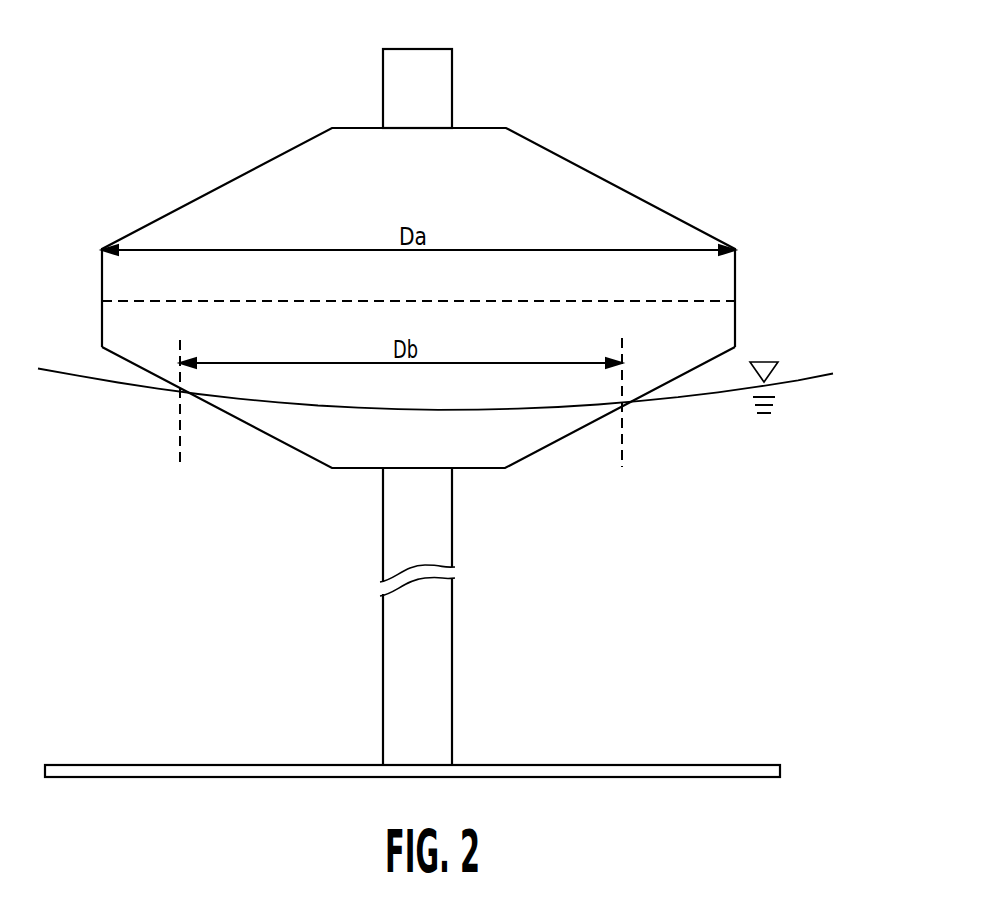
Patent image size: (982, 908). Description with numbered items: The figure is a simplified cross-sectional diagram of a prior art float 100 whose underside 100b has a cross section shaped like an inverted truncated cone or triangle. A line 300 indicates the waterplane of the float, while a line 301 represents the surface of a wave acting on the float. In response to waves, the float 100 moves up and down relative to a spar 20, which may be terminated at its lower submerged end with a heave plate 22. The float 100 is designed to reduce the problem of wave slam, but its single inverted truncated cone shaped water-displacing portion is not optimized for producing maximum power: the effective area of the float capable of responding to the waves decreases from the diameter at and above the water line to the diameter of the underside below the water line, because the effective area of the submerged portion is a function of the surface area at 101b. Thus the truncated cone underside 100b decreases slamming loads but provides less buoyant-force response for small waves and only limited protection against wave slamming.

The spar 20 is at (452, 67).
The float 100 is at (572, 177).
The underside 100b is at (523, 445).
The line indicating waterplane 300 is at (265, 301).
The surface of a wave 301 is at (803, 382).
The surface area 101b is at (177, 393).
The heave plate 22 is at (668, 768).